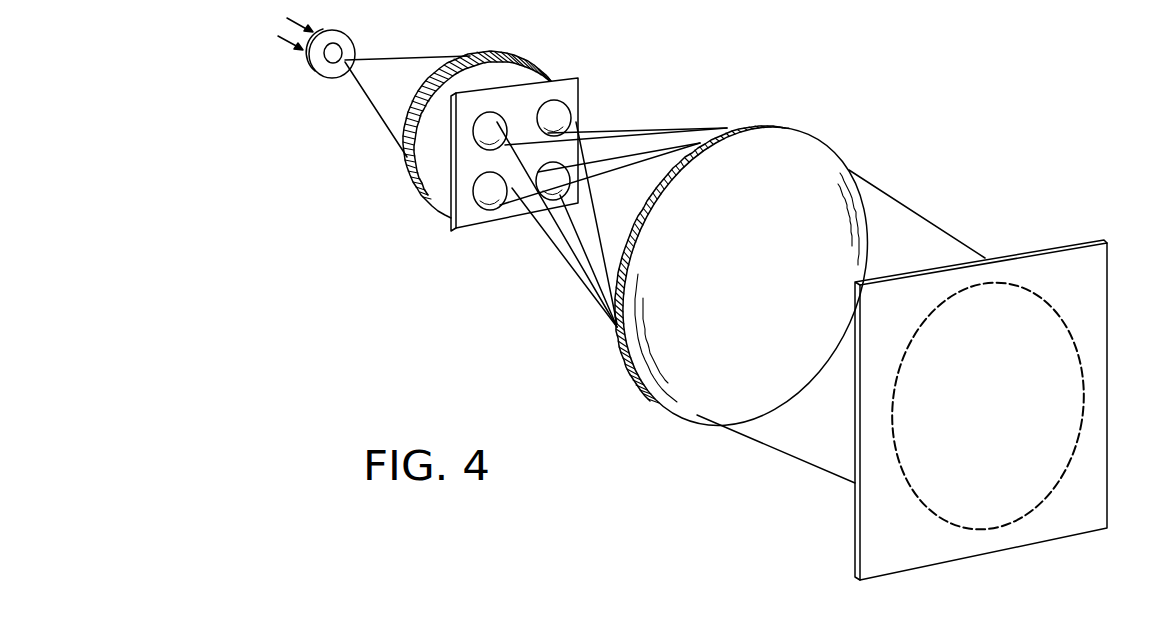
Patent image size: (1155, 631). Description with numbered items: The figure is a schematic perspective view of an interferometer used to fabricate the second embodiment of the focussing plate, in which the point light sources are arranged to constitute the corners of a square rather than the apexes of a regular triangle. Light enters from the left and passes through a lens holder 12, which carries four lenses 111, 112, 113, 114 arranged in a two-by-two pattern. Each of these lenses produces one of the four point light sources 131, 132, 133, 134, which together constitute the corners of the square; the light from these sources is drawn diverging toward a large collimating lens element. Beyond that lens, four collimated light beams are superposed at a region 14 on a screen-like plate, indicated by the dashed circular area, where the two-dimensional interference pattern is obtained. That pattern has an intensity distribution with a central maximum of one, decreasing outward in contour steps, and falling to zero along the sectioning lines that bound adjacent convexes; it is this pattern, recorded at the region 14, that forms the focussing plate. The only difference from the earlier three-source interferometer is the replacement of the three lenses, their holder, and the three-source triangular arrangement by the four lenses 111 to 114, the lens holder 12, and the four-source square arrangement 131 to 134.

The lens holder 12 is at (460, 182).
The lens 111 is at (489, 121).
The lens 112 is at (553, 107).
The lens 113 is at (483, 205).
The lens 114 is at (562, 170).
The point light source 131 is at (523, 127).
The point light source 132 is at (581, 135).
The point light source 133 is at (518, 207).
The point light source 134 is at (572, 200).
The region 14 is at (1062, 342).